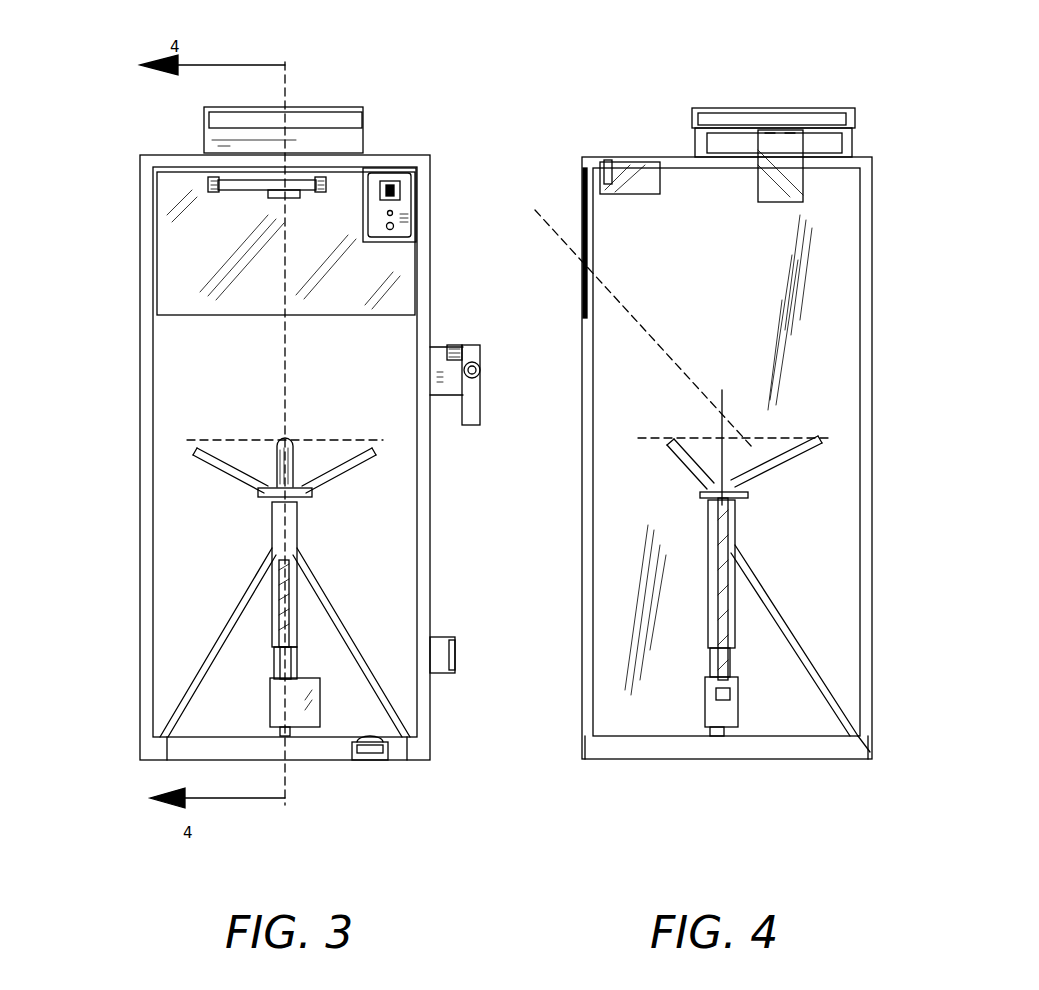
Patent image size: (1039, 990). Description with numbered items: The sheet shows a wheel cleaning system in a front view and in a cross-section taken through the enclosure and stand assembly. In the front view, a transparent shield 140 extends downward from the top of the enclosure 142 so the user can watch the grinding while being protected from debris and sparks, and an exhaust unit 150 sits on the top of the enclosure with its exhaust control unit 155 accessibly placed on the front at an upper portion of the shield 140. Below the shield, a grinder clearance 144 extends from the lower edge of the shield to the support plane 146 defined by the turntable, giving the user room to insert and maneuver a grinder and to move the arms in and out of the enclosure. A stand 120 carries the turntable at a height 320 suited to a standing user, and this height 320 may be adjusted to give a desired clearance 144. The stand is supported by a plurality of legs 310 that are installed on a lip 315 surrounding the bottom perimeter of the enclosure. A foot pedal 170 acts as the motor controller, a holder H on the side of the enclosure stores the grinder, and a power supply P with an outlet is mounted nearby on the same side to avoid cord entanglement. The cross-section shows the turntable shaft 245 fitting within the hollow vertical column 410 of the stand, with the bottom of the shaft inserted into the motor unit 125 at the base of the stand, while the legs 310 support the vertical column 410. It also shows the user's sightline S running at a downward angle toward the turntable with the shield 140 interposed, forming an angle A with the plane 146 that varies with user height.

In FIG. 3, the stand 120 is at (295, 515).
In FIG. 4, the motor 125 is at (722, 718).
In FIG. 3, the shield 140 is at (172, 243).
In FIG. 4, the shield 140 is at (583, 195).
In FIG. 3, the top of enclosure 142 is at (160, 162).
In FIG. 3, the grinder clearance 144 is at (116, 317).
In FIG. 3, the support plane 146 is at (285, 429).
In FIG. 4, the support plane 146 is at (717, 438).
In FIG. 3, the exhaust unit 150 is at (335, 138).
In FIG. 3, the exhaust control unit 155 is at (410, 182).
In FIG. 3, the foot pedal 170 is at (362, 765).
In FIG. 4, the shaft 245 is at (723, 518).
In FIG. 3, the legs 310 is at (225, 632).
In FIG. 3, the lip 315 is at (155, 747).
In FIG. 3, the height 320 is at (487, 490).
In FIG. 4, the vertical column 410 is at (730, 572).
In FIG. 3, the holder H is at (440, 350).
In FIG. 3, the power supply P is at (446, 668).
In FIG. 4, the sightline S is at (635, 318).
In FIG. 4, the angle A is at (716, 447).